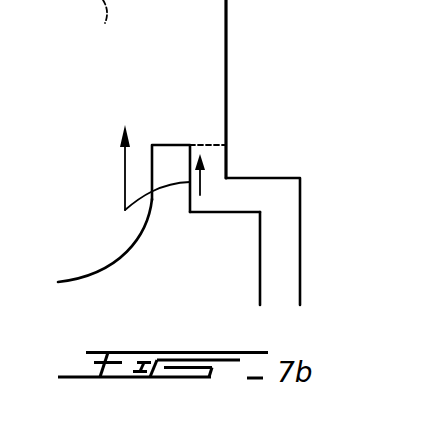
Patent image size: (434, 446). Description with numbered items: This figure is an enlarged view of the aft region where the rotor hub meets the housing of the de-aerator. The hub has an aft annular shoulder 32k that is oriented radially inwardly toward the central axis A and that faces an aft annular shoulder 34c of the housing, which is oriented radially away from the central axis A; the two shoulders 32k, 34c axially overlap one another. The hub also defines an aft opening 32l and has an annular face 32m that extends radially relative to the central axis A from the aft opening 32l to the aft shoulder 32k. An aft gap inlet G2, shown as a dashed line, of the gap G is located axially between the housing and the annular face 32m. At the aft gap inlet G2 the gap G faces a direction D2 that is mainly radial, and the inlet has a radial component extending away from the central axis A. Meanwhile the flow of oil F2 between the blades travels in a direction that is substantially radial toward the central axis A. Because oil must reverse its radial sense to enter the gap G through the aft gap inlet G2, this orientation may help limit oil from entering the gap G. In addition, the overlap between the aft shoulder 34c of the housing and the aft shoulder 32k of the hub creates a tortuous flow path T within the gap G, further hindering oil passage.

The aft opening 32l is at (163, 144).
The annular face 32m is at (188, 210).
The aft annular shoulder 32k is at (223, 212).
The aft annular shoulder 34c is at (287, 176).
The tortuous flow path T is at (231, 185).
The aft gap inlet G2 is at (202, 144).
The flow of oil F2 is at (125, 166).
The direction D2 is at (125, 210).
The gap G is at (283, 247).
The central axis A is at (97, 29).